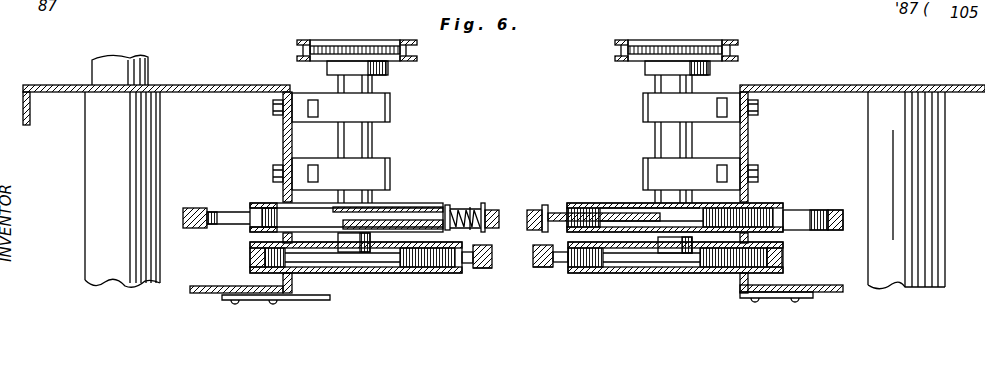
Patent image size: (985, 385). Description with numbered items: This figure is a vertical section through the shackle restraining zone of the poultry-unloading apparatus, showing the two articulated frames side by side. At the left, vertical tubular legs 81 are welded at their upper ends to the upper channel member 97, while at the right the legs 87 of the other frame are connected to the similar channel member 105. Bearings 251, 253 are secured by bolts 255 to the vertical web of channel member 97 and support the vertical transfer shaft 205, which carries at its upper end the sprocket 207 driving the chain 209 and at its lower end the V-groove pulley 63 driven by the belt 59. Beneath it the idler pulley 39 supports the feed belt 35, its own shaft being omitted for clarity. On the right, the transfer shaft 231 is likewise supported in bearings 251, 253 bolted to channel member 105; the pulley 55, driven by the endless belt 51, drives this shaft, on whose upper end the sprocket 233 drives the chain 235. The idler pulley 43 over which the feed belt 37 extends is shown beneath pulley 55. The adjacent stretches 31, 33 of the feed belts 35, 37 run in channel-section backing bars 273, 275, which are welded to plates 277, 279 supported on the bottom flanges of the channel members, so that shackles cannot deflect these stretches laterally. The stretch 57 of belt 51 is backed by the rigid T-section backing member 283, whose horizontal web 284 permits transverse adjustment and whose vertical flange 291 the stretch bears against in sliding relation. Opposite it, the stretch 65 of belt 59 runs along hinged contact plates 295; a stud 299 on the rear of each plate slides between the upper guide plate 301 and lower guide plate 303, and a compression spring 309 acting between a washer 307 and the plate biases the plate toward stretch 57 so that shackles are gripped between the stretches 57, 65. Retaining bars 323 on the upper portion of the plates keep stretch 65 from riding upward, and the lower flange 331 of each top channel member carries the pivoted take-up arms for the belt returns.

The stretch of feed belt 31 is at (489, 270).
The stretch of feed belt 33 is at (534, 270).
The feed belt 35 is at (250, 258).
The feed belt 37 is at (783, 257).
The idler pulley 39 is at (418, 273).
The idler pulley 43 is at (608, 273).
The endless belt 51 is at (843, 212).
The V-groove pulley 55 is at (601, 205).
The stretch of belt 57 is at (546, 205).
The belt 59 is at (183, 215).
The V-groove pulley 63 is at (422, 205).
The stretch of belt 65 is at (486, 230).
The tubular legs 81 is at (95, 161).
The legs 87 is at (940, 150).
The upper channel member 97 is at (240, 84).
The channel member 105 is at (855, 85).
The vertical transfer shaft 205 is at (378, 78).
The sprocket 207 is at (360, 46).
The chain 209 is at (323, 40).
The vertical transfer shaft 231 is at (690, 83).
The sprocket 233 is at (680, 46).
The chain 235 is at (733, 42).
The bearing 251 is at (390, 107).
The bearing 253 is at (390, 160).
The bolts 255 is at (273, 107).
The backing bar 273 is at (478, 269).
The backing bar 275 is at (547, 268).
The plate 277 is at (325, 298).
The plate 279 is at (693, 298).
The backing member 283 is at (563, 212).
The horizontal web 284 is at (632, 212).
The vertical flange 291 is at (538, 235).
The contact plates 295 is at (493, 209).
The stud 299 is at (420, 219).
The upper guide plate 301 is at (393, 206).
The lower guide plate 303 is at (393, 227).
The washers 307 is at (448, 206).
The compression springs 309 is at (472, 207).
The retaining bars 323 is at (478, 211).
The lower flange 331 is at (200, 296).